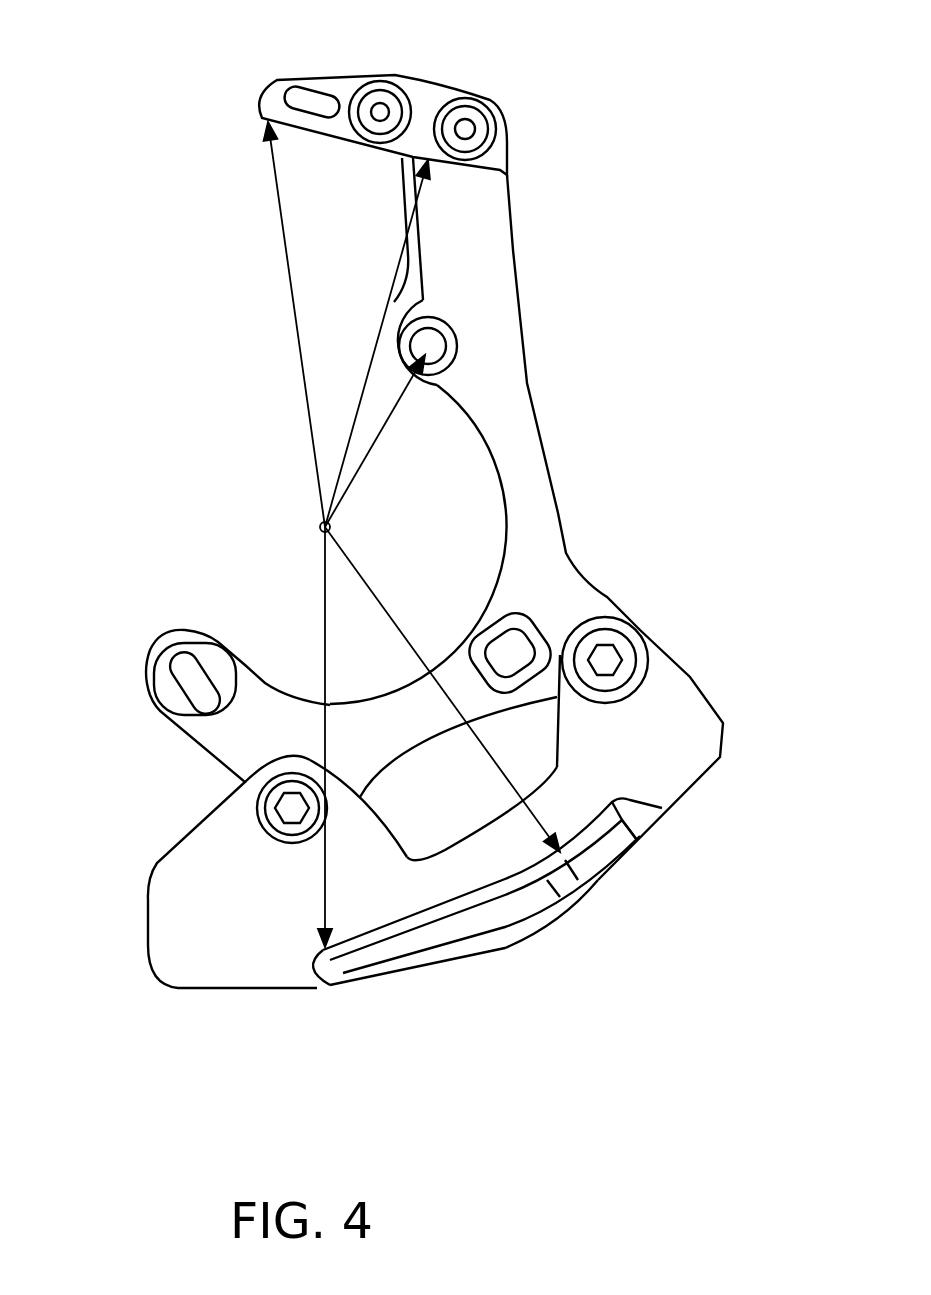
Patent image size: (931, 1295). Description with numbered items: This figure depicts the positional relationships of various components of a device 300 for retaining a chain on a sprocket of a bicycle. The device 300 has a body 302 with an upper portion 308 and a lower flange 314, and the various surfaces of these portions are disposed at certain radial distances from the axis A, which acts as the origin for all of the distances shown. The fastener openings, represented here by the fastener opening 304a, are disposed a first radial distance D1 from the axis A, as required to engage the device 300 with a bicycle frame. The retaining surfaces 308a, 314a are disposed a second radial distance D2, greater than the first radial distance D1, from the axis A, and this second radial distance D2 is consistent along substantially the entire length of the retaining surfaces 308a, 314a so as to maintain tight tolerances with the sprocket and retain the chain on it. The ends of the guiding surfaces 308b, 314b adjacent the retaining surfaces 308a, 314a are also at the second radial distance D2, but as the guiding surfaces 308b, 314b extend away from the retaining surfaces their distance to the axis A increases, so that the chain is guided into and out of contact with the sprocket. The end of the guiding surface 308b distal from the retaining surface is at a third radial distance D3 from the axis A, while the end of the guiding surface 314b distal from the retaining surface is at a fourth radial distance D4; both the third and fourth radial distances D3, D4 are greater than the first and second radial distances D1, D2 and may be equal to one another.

The device 300 is at (596, 223).
The bracket body 302 is at (515, 428).
The fastener opening 304a is at (432, 343).
The upper mounting portion 308 is at (410, 93).
The retaining surface 308a is at (446, 161).
The guiding surface 308b is at (315, 140).
The flange 314 is at (433, 943).
The retaining surface 314a is at (576, 826).
The guiding surface 314b is at (323, 940).
The axis A is at (320, 530).
The first radial distance D1 is at (373, 447).
The second radial distance D2 is at (412, 255).
The third radial distance D3 is at (297, 345).
The fourth radial distance D4 is at (325, 608).